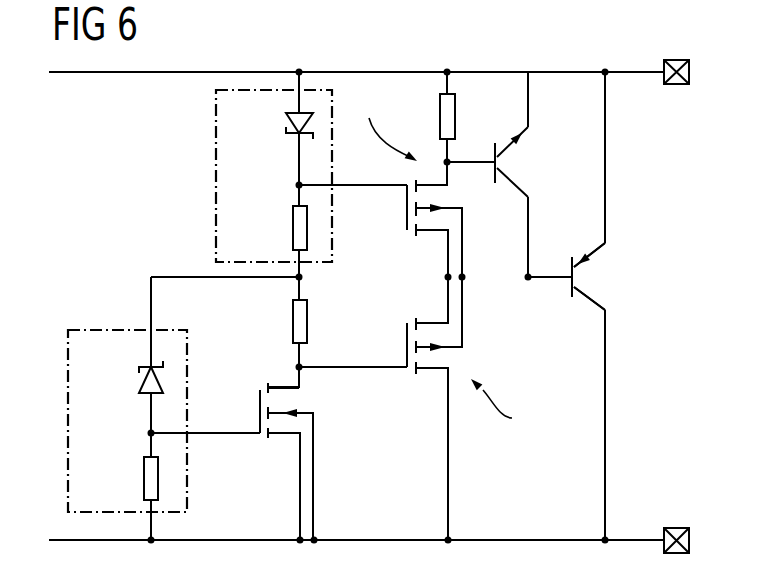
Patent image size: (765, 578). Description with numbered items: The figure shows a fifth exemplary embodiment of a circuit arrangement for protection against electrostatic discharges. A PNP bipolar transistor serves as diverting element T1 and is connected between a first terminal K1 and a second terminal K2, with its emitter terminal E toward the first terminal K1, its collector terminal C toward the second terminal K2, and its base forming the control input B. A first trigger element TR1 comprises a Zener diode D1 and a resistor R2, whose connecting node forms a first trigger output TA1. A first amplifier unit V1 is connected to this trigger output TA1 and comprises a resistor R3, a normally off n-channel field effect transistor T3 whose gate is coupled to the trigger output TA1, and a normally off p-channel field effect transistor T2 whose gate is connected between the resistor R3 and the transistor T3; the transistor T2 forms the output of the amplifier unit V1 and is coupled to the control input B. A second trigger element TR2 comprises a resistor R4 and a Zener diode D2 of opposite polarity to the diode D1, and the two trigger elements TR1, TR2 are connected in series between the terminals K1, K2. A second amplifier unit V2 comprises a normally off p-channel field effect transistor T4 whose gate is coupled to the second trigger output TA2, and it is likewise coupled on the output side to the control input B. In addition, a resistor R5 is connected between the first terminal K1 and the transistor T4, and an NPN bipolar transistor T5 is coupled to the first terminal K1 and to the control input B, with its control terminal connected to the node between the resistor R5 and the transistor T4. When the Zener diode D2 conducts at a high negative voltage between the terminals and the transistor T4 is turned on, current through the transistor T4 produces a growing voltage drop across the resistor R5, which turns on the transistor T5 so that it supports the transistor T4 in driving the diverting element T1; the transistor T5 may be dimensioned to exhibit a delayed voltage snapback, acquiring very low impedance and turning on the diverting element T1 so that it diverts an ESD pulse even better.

The second trigger element TR2 is at (215, 160).
The Zener diode D2 is at (290, 125).
The resistor R4 is at (293, 228).
The second amplifier unit V2 is at (386, 124).
The second trigger output TA2 is at (333, 184).
The normally off p-channel field effect transistor T4 is at (405, 206).
The resistor R5 is at (456, 122).
The NPN bipolar transistor T5 is at (500, 167).
The first terminal K1 is at (676, 86).
The diverting element T1 is at (578, 280).
The emitter terminal E is at (589, 241).
The control input B is at (550, 262).
The collector terminal C is at (589, 315).
The first trigger element TR1 is at (88, 329).
The Zener diode D1 is at (141, 379).
The resistor R3 is at (293, 322).
The normally off n-channel field effect transistor T3 is at (259, 413).
The normally off p-channel field effect transistor T2 is at (405, 348).
The first trigger output TA1 is at (187, 436).
The resistor R2 is at (144, 480).
The first amplifier unit V1 is at (507, 406).
The second terminal K2 is at (676, 526).